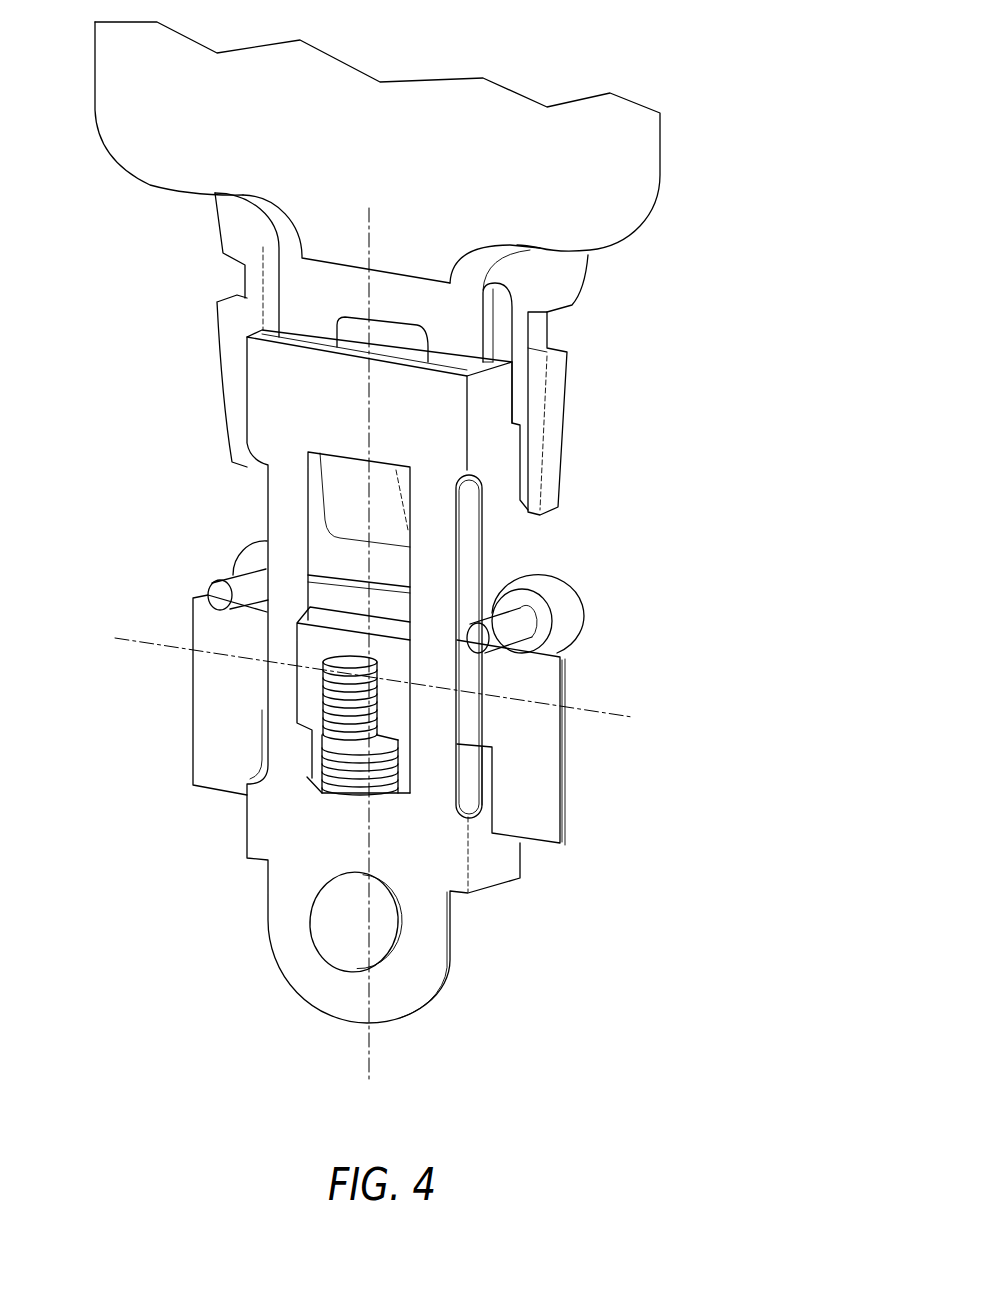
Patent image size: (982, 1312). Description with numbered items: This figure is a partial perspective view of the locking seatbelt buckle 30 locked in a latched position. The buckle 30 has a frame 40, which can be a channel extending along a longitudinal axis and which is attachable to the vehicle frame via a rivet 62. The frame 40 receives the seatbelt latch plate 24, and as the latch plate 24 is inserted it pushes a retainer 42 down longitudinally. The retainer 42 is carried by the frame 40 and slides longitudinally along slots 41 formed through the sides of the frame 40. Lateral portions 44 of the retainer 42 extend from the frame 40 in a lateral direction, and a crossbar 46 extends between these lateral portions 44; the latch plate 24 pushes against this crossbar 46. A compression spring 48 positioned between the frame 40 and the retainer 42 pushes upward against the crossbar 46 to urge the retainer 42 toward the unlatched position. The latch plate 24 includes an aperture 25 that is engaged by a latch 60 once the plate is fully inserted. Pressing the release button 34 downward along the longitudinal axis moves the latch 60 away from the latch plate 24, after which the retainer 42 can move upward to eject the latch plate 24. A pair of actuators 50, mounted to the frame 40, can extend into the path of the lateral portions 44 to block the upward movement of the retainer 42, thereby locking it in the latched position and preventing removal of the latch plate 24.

The latch plate 24 is at (453, 329).
The aperture 25 is at (361, 327).
The locking seatbelt buckle 30 is at (675, 527).
The release button 34 is at (568, 398).
The frame 40 is at (430, 832).
The slots 41 is at (463, 775).
The retainer 42 is at (568, 780).
The lateral portions 44 is at (225, 628).
The crossbar 46 is at (392, 611).
The compression spring 48 is at (330, 793).
The actuators 50 is at (240, 555).
The latch 60 is at (346, 497).
The rivet 62 is at (337, 933).